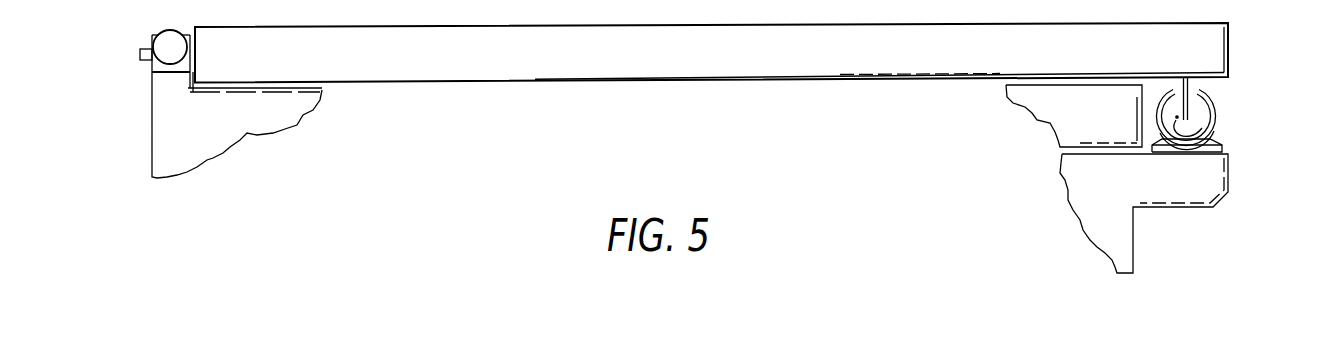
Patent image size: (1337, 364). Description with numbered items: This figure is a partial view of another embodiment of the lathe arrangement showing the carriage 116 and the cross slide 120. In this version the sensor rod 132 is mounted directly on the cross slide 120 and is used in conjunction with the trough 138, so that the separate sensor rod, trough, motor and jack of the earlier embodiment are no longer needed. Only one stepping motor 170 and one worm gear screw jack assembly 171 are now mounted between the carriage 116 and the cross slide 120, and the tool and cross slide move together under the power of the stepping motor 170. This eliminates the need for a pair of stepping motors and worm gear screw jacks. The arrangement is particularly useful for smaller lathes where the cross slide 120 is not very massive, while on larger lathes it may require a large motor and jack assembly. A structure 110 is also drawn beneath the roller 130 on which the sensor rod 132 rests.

The frame member 110 is at (1117, 193).
The carriage 116 is at (206, 126).
The cross slide 120 is at (690, 57).
The roller 130 is at (1206, 133).
The sensor rod 132 is at (1188, 103).
The trough 138 is at (1217, 117).
The stepping motor 170 is at (183, 6).
The worm gear screw jack assembly 171 is at (152, 40).